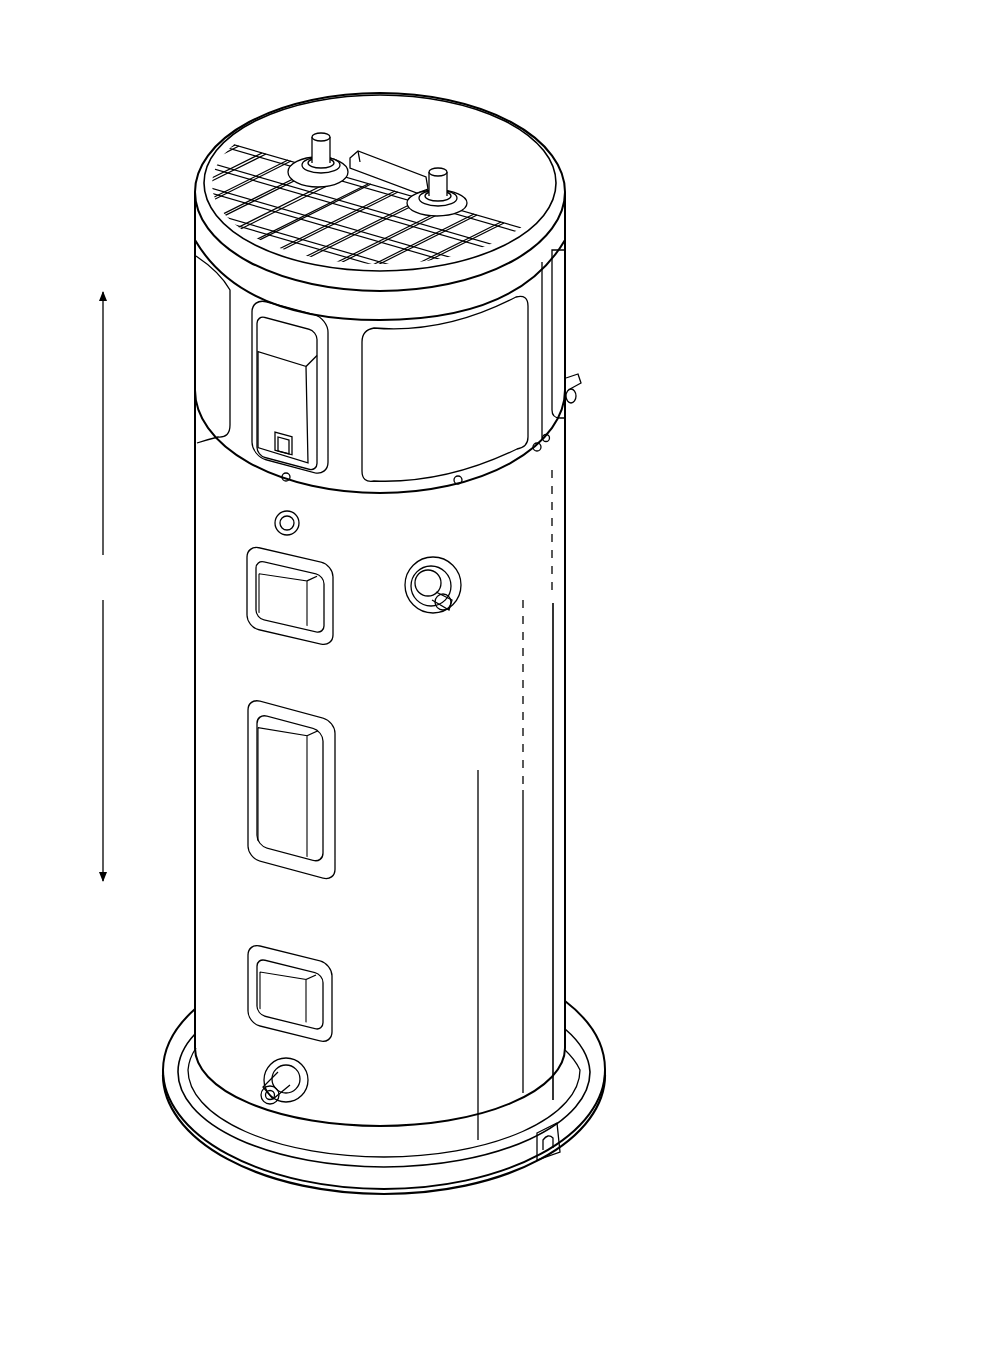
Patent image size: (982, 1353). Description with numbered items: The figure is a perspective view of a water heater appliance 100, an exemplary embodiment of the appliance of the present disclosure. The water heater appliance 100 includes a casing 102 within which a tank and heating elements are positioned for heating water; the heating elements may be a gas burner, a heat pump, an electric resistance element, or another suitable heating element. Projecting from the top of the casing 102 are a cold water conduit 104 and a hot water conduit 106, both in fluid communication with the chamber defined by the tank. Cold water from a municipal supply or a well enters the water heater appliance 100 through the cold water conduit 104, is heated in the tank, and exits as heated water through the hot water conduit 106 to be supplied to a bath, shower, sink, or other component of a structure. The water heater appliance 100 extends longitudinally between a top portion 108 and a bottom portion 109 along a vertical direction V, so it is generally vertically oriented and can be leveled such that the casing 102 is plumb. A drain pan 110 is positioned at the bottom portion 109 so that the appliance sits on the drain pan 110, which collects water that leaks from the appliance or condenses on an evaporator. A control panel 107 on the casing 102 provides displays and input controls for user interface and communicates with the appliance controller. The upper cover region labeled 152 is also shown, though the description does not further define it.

The water heater appliance 100 is at (361, 658).
The casing 102 is at (537, 580).
The cold water conduit 104 is at (455, 182).
The hot water conduit 106 is at (308, 148).
The control panel 107 is at (288, 390).
The top portion 108 is at (176, 178).
The bottom portion 109 is at (148, 1047).
The drain pan 110 is at (622, 1058).
The top cover grille 152 is at (566, 185).